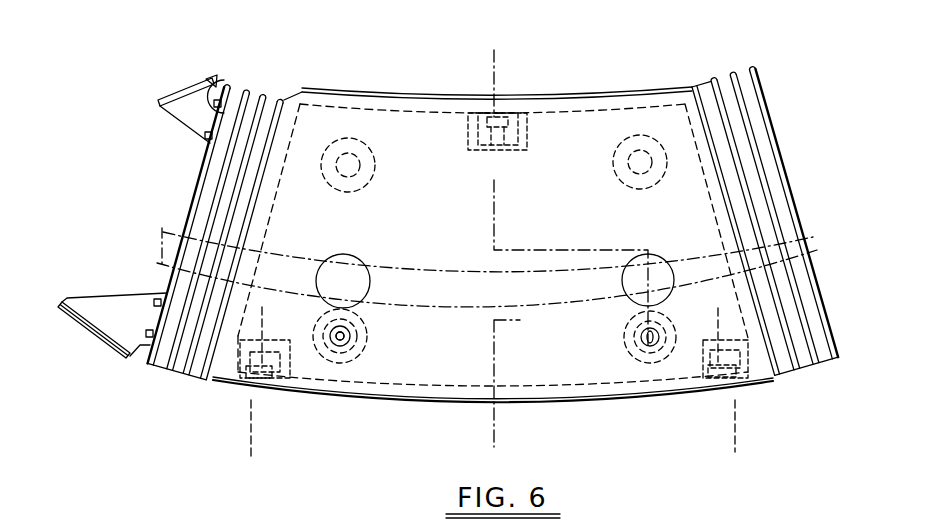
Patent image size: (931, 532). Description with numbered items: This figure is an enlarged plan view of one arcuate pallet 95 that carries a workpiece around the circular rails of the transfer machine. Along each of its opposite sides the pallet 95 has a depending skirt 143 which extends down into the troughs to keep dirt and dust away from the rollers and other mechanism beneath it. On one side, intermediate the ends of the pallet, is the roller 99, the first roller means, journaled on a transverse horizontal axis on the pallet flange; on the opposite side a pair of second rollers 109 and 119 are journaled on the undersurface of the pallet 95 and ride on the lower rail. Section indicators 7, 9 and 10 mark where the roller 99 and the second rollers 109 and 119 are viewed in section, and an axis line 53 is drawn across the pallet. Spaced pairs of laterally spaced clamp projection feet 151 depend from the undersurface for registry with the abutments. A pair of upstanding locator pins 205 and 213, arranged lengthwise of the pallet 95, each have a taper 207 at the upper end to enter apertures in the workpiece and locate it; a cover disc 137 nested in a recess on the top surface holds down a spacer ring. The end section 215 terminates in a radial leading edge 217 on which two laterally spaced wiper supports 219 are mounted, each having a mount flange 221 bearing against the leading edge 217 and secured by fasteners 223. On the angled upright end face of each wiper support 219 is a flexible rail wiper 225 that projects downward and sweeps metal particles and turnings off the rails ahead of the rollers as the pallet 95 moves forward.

The pallet 95 is at (668, 86).
The depending skirt 143 is at (363, 92).
The end section 215 is at (298, 135).
The flexible rail wiper 225 is at (173, 87).
The wiper support 219 is at (198, 118).
The mount flange 221 is at (214, 80).
The fasteners 223 is at (211, 140).
The radial leading edge 217 is at (163, 235).
The hinge axis 53 is at (443, 270).
The roller 99 is at (503, 110).
The clamp projection feet 151 is at (370, 176).
The cover disc 137 is at (363, 262).
The taper 207 is at (350, 335).
The locator pin 205 is at (640, 337).
The locator pin 213 is at (341, 344).
The second roller 119 is at (287, 393).
The second roller 109 is at (753, 387).
The section line 7- 7 is at (486, 81).
The section line 9- 9 is at (708, 316).
The section line 10- 10 is at (278, 313).